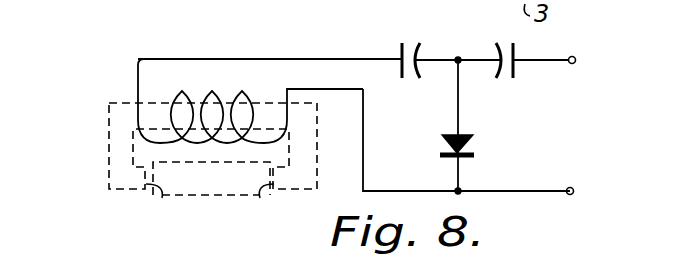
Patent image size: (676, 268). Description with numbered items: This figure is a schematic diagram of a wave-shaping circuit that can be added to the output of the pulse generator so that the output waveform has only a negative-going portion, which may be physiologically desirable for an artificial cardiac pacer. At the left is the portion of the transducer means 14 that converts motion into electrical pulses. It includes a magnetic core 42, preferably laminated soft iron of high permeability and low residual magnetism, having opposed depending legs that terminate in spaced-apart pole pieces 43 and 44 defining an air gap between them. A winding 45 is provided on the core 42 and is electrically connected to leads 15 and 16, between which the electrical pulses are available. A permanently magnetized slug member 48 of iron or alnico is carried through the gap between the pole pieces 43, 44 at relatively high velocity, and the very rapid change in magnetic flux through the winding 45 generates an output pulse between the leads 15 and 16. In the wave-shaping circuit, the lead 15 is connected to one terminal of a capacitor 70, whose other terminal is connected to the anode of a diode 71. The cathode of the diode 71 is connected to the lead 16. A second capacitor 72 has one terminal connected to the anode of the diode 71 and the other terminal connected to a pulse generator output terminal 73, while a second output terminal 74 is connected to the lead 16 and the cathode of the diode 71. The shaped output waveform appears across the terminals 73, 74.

The transducer means 14 is at (188, 36).
The output lead 15 is at (313, 59).
The output lead 16 is at (430, 190).
The magnetic core 42 is at (110, 132).
The pole piece 43 is at (158, 204).
The pole piece 44 is at (266, 200).
The winding 45 is at (232, 93).
The slug member 48 is at (190, 190).
The capacitor 70 is at (413, 43).
The diode 71 is at (476, 143).
The second capacitor 72 is at (513, 80).
The pulse generator output terminal 73 is at (577, 63).
The second output terminal 74 is at (574, 188).